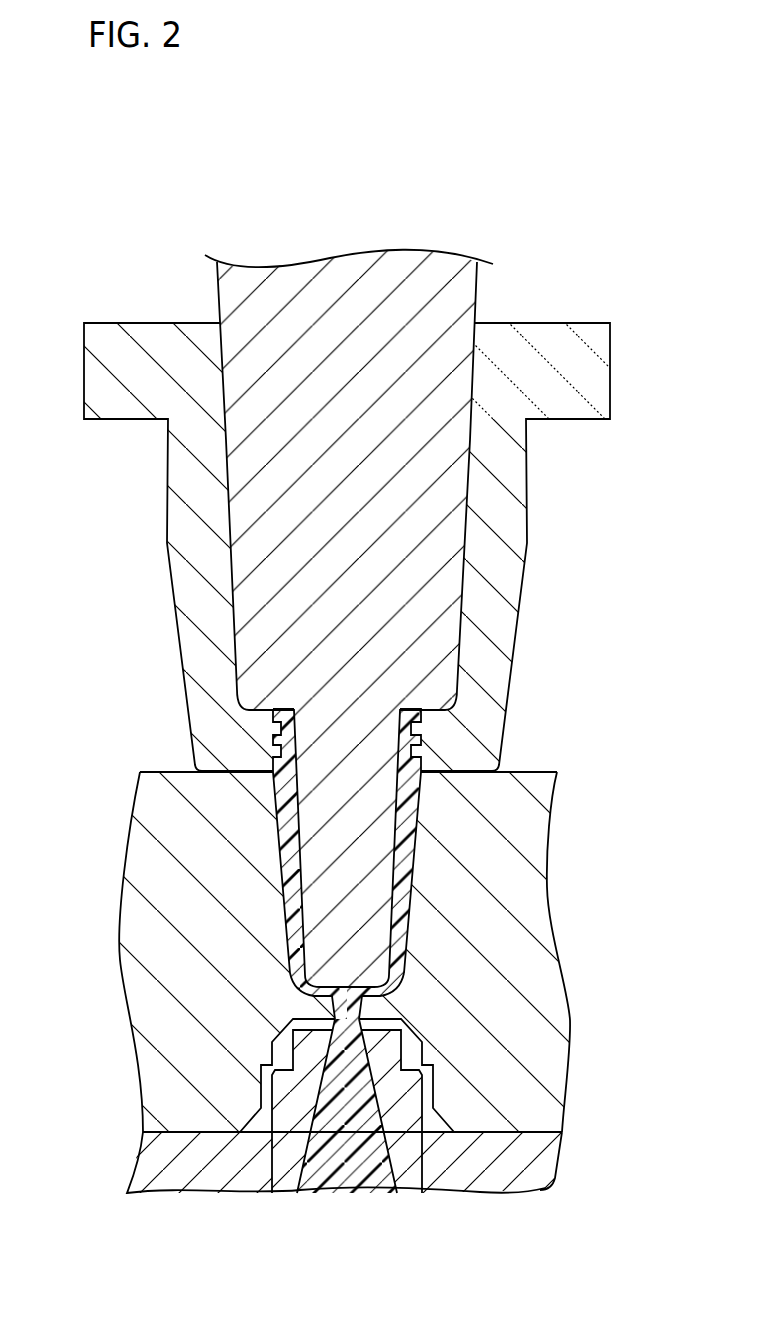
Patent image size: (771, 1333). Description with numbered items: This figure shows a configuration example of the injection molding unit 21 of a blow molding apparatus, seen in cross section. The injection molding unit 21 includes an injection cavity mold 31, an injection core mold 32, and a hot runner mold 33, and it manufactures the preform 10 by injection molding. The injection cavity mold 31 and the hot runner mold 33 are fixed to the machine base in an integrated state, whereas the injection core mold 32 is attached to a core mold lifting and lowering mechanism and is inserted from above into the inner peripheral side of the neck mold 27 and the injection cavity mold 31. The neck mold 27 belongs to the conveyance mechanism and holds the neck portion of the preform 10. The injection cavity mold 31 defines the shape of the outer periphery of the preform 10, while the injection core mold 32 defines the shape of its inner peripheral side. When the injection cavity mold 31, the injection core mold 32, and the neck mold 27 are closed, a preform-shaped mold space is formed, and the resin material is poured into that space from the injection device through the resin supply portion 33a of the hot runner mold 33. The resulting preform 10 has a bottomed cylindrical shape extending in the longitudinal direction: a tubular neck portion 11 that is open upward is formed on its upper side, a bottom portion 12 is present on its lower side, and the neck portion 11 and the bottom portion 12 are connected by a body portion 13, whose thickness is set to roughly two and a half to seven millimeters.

The injection molding unit 21 is at (551, 158).
The injection core mold 32 is at (477, 283).
The neck mold 27 is at (175, 615).
The preform 10 is at (341, 948).
The neck portion 11 is at (415, 738).
The body portion 13 is at (278, 864).
The bottom portion 12 is at (330, 997).
The injection cavity mold 31 is at (566, 1000).
The hot runner mold 33 is at (397, 1139).
The resin supply portion 33a is at (427, 1162).